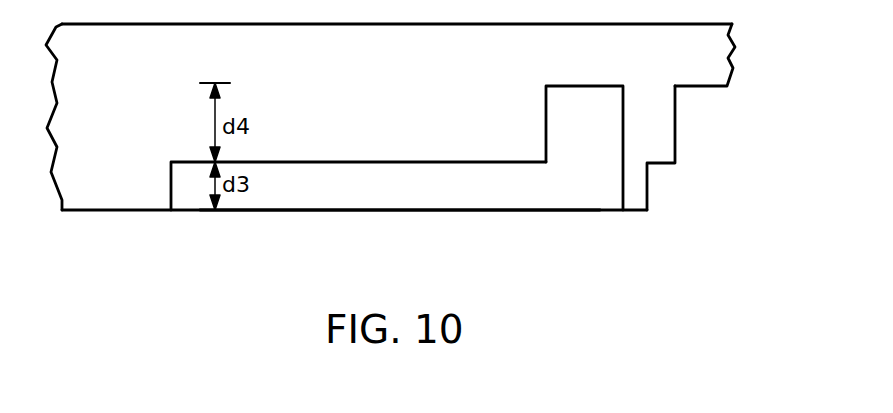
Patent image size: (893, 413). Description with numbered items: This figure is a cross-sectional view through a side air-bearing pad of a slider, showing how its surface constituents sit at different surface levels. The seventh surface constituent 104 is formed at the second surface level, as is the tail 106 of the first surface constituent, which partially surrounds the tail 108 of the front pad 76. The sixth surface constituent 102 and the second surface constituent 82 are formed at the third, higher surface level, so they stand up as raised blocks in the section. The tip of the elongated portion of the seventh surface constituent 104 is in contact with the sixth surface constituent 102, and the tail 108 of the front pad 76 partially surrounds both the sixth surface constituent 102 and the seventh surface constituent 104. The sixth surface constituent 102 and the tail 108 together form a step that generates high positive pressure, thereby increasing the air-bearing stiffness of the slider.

The front pad 76 is at (127, 210).
The second surface constituent 82 is at (707, 86).
The sixth surface constituent 102 is at (580, 86).
The seventh surface constituent 104 is at (400, 162).
The tail of the first surface constituent 106 is at (660, 165).
The tail of the front pad 108 is at (333, 210).